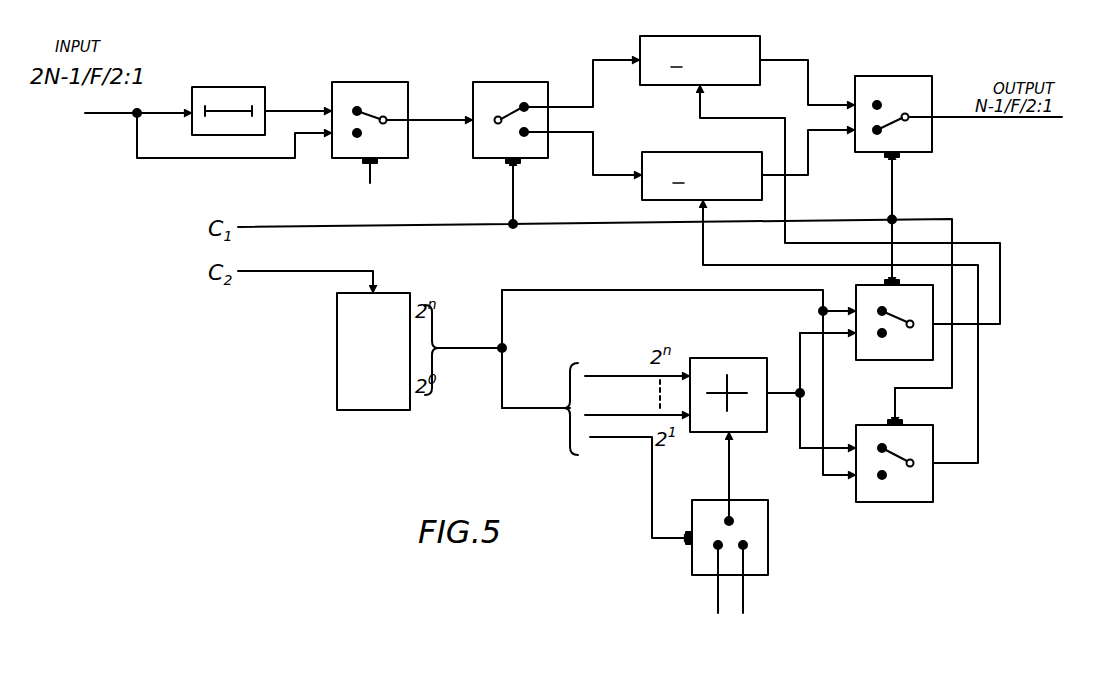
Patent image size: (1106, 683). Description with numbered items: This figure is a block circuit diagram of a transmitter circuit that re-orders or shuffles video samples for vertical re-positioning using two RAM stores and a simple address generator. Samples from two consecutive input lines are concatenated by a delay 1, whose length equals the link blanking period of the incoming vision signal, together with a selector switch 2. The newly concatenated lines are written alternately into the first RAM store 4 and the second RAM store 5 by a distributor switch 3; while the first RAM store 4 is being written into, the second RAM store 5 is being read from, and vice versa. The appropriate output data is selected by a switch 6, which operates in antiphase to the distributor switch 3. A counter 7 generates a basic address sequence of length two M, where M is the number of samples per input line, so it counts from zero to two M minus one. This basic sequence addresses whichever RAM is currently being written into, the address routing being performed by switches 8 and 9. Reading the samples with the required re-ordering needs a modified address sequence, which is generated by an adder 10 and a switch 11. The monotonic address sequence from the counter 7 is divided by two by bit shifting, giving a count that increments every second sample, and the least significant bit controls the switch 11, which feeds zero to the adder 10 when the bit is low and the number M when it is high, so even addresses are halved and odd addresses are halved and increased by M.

The delay 1 is at (252, 92).
The selector switch 2 is at (388, 86).
The distributor switch 3 is at (497, 88).
The first RAM store 4 is at (748, 44).
The second RAM store 5 is at (655, 155).
The output switch 6 is at (915, 88).
The counter 7 is at (358, 403).
The address routing switch 8 is at (933, 303).
The address routing switch 9 is at (917, 450).
The adder 10 is at (748, 357).
The switch 11 is at (768, 542).